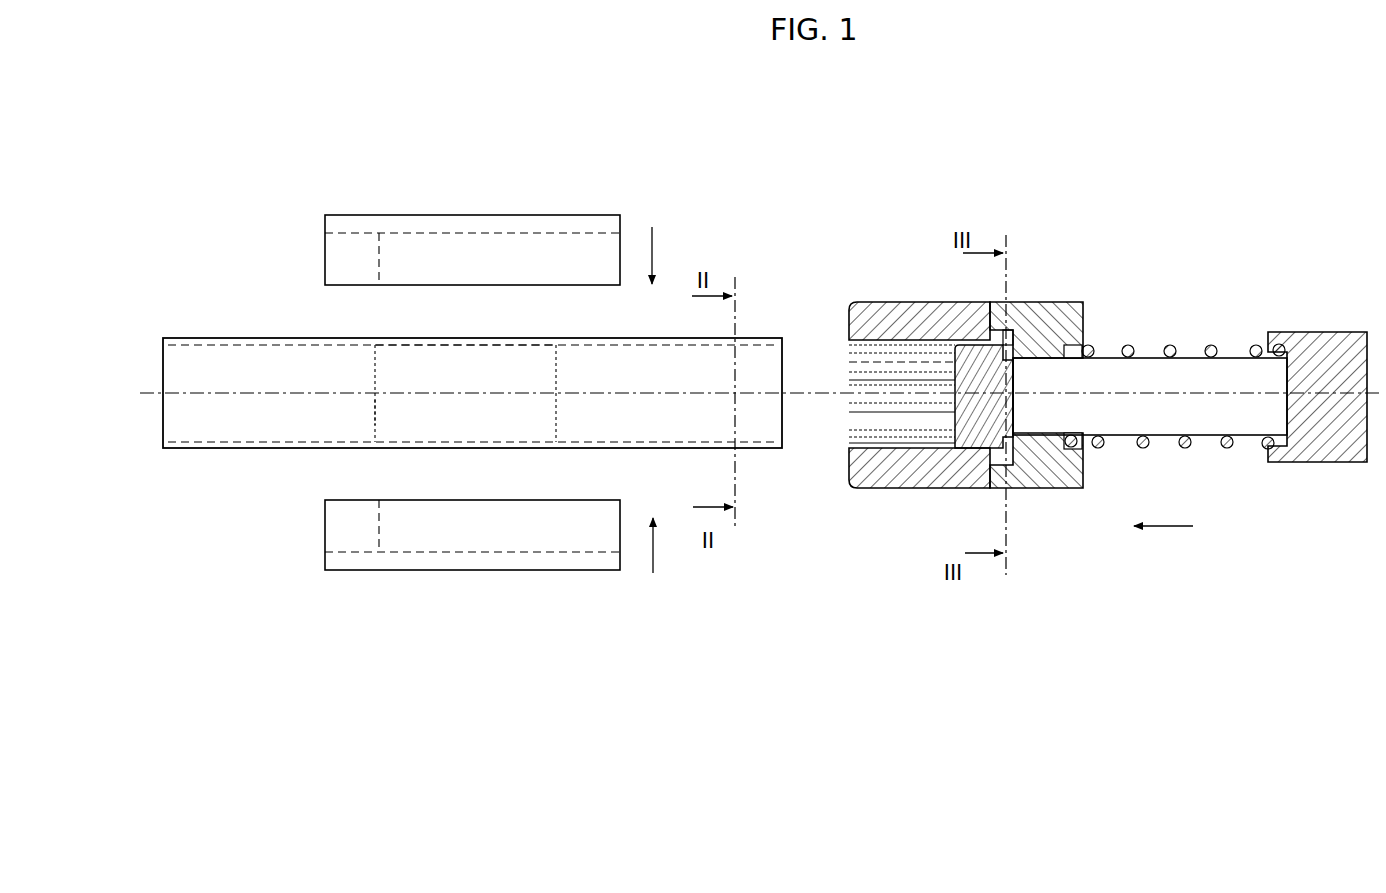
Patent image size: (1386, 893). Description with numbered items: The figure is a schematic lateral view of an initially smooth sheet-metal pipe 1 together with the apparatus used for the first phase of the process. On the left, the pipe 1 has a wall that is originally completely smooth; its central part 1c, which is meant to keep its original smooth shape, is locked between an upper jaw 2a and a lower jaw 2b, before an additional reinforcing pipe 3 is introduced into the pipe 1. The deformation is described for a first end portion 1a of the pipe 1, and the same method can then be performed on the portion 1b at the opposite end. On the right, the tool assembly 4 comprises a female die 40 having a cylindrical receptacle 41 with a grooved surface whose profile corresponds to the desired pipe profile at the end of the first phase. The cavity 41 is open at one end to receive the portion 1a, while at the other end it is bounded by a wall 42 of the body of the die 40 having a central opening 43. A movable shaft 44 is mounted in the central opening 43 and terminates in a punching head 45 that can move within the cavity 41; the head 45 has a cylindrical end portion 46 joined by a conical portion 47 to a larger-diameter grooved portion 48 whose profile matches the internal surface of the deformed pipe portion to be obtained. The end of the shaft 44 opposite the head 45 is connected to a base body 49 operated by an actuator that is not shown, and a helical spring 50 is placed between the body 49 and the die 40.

The pipe 1 is at (243, 336).
The first end portion 1a is at (650, 430).
The opposite end portion 1b is at (207, 428).
The central part 1c is at (453, 355).
The upper jaw 2a is at (325, 257).
The lower jaw 2b is at (325, 538).
The additional reinforcing pipe 3 is at (372, 412).
The tool assembly 4 is at (1198, 264).
The female die 40 is at (955, 391).
The cylindrical receptacle 41 is at (853, 446).
The wall 42 is at (1052, 484).
The central opening 43 is at (1053, 362).
The movable shaft 44 is at (1232, 361).
The punching head 45 is at (940, 478).
The end portion 46 is at (850, 368).
The conical portion 47 is at (976, 400).
The grooved portion 48 is at (1017, 340).
The base body 49 is at (1345, 330).
The helical spring 50 is at (1147, 449).